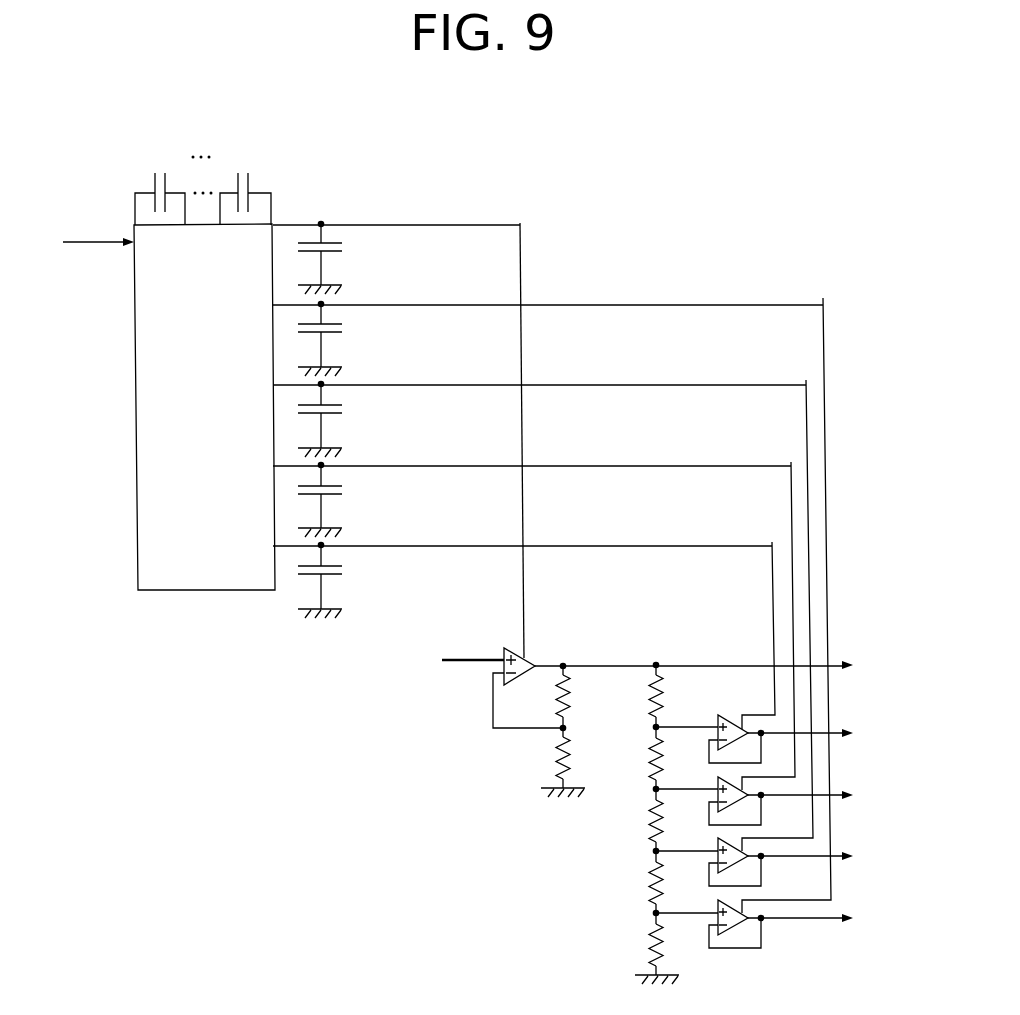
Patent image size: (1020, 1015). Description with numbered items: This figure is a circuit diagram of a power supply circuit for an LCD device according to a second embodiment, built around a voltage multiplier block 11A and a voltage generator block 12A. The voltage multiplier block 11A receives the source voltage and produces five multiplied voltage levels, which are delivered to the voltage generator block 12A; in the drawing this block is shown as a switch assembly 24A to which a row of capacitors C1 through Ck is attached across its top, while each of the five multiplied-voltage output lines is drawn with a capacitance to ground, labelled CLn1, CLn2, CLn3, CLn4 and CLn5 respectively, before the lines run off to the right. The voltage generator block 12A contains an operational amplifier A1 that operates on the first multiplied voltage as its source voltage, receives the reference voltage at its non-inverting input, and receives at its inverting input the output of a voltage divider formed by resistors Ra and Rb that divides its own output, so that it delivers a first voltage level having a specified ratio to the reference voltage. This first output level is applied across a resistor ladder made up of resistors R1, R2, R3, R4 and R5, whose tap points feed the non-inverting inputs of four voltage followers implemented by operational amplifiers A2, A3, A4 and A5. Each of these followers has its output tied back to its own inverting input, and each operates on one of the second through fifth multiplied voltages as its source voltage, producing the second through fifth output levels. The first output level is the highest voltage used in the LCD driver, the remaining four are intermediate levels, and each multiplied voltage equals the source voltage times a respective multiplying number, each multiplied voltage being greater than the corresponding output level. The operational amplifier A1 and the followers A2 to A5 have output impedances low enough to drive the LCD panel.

The voltage multiplier block 11A is at (552, 503).
The voltage generator block 12A is at (648, 768).
The switch assembly 24A is at (162, 367).
The capacitor C1 is at (160, 185).
The capacitor Ck is at (245, 185).
The line capacitance CLn1 is at (353, 257).
The line capacitance CLn2 is at (353, 338).
The line capacitance CLn3 is at (353, 419).
The line capacitance CLn4 is at (353, 499).
The line capacitance CLn5 is at (353, 580).
The operational amplifier A1 is at (641, 682).
The operational amplifier (voltage follower) A2 is at (773, 739).
The operational amplifier (voltage follower) A3 is at (773, 801).
The operational amplifier (voltage follower) A4 is at (773, 862).
The operational amplifier (voltage follower) A5 is at (773, 924).
The resistor Ra is at (544, 695).
The resistor Rb is at (551, 761).
The resistor R1 is at (637, 694).
The resistor R2 is at (637, 756).
The resistor R3 is at (637, 818).
The resistor R4 is at (637, 880).
The resistor R5 is at (645, 947).